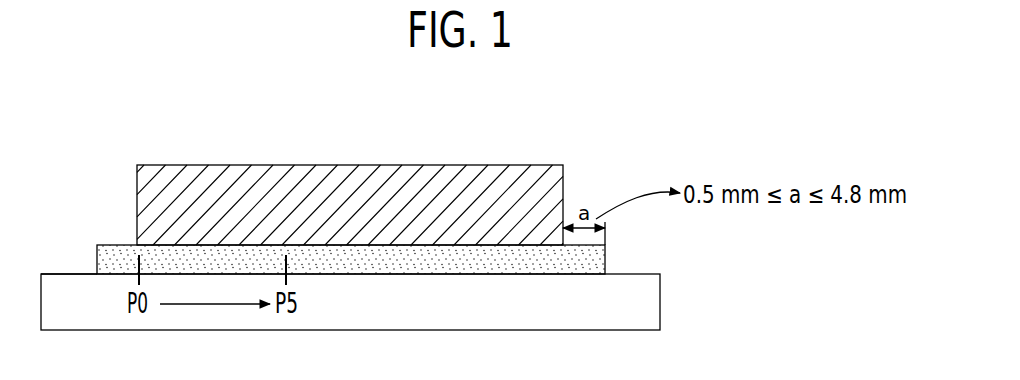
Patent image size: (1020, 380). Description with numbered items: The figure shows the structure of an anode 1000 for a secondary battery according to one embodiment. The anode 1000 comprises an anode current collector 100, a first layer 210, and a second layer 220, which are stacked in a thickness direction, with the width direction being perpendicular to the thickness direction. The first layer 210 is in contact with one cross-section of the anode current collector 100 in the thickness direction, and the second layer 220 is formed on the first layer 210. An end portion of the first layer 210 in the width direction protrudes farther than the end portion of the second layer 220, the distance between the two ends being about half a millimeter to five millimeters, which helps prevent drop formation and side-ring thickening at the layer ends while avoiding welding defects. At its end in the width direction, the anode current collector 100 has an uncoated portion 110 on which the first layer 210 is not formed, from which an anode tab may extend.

The anode 1000 is at (750, 94).
The anode current collector 100 is at (660, 302).
The uncoated portion 110 is at (67, 274).
The first layer 210 is at (605, 255).
The second layer 220 is at (563, 183).